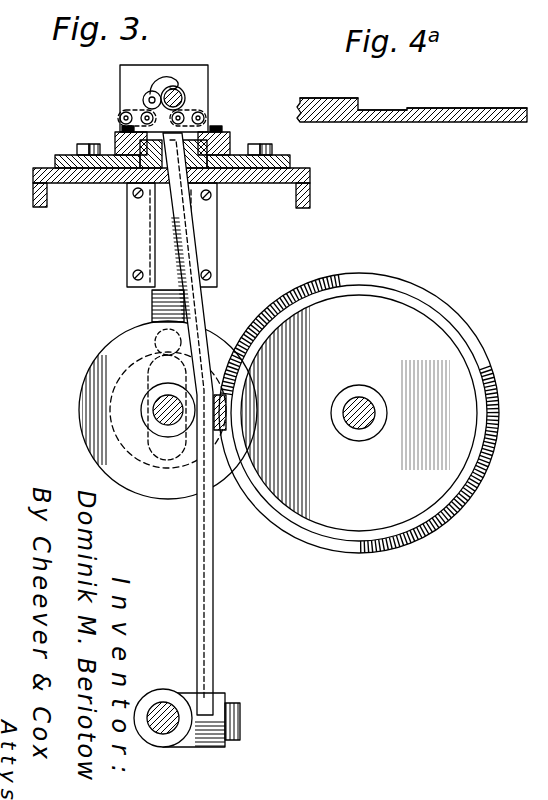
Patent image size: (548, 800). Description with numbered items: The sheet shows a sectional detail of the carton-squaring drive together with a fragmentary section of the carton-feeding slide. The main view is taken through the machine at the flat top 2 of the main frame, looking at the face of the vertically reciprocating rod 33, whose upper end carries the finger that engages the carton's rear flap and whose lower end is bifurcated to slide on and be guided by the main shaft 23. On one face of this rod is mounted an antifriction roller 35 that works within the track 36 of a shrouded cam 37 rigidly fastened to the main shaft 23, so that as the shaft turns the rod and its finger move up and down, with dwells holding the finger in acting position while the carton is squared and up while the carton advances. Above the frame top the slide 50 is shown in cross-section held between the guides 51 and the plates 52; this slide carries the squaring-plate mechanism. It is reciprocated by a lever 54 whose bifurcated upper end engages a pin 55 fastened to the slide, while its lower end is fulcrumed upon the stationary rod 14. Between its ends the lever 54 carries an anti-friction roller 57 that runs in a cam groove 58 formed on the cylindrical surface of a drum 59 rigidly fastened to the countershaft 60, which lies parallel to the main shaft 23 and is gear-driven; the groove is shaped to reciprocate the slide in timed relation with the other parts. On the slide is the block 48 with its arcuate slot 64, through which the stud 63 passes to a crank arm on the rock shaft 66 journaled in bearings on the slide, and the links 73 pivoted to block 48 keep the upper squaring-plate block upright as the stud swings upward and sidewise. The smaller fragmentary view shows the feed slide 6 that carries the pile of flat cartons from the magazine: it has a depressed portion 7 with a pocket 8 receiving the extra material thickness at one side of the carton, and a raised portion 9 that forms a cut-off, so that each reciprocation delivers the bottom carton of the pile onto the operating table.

In FIG. 3, the flat top 2 is at (310, 180).
In FIG. 4a, the slide 6 is at (455, 116).
In FIG. 4a, the depressed portion 7 is at (490, 108).
In FIG. 4a, the pocket 8 is at (382, 110).
In FIG. 4a, the raised portion 9 is at (318, 98).
In FIG. 3, the stationary rod 14 is at (170, 733).
In FIG. 3, the main shaft 23 is at (160, 403).
In FIG. 3, the vertically reciprocating rod 33 is at (165, 295).
In FIG. 3, the antifriction roller 35 is at (155, 336).
In FIG. 3, the track 36 is at (80, 412).
In FIG. 3, the shrouded cam 37 is at (80, 433).
In FIG. 3, the block 48 is at (197, 75).
In FIG. 3, the slide 50 is at (207, 150).
In FIG. 3, the guides 51 is at (60, 160).
In FIG. 3, the plates 52 is at (115, 138).
In FIG. 3, the lever 54 is at (213, 562).
In FIG. 3, the pin 55 is at (108, 186).
In FIG. 3, the anti-friction roller 57 is at (226, 425).
In FIG. 3, the cam groove 58 is at (470, 352).
In FIG. 3, the drum 59 is at (428, 480).
In FIG. 3, the countershaft 60 is at (368, 405).
In FIG. 3, the stud 63 is at (152, 91).
In FIG. 3, the arcuate slot 64 is at (176, 80).
In FIG. 3, the rock shaft 66 is at (185, 99).
In FIG. 3, the links 73 is at (138, 110).